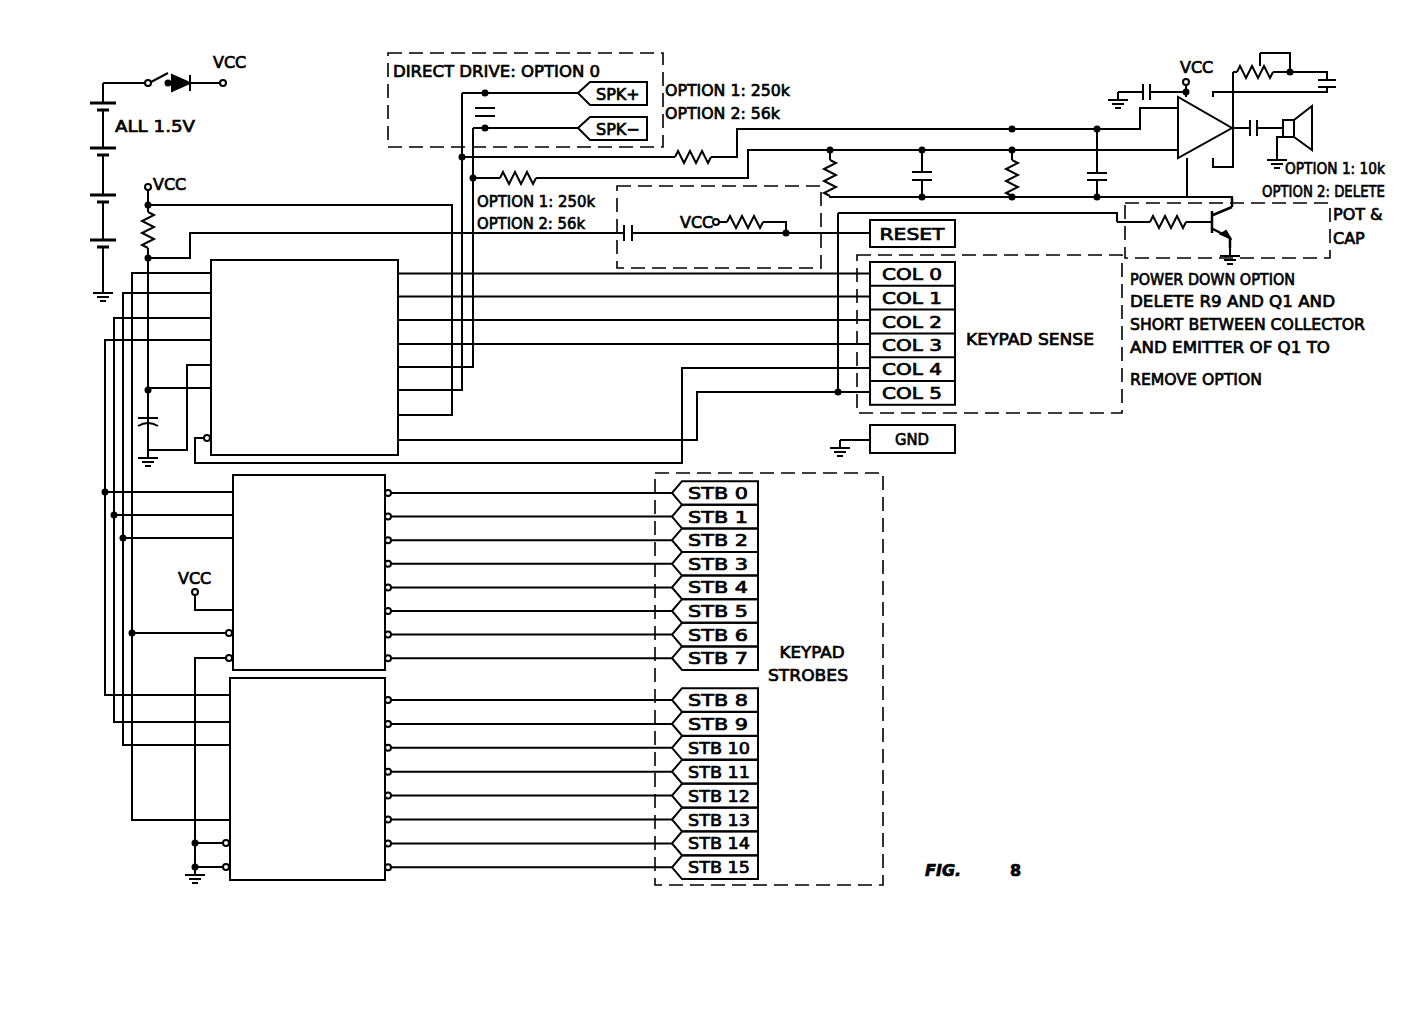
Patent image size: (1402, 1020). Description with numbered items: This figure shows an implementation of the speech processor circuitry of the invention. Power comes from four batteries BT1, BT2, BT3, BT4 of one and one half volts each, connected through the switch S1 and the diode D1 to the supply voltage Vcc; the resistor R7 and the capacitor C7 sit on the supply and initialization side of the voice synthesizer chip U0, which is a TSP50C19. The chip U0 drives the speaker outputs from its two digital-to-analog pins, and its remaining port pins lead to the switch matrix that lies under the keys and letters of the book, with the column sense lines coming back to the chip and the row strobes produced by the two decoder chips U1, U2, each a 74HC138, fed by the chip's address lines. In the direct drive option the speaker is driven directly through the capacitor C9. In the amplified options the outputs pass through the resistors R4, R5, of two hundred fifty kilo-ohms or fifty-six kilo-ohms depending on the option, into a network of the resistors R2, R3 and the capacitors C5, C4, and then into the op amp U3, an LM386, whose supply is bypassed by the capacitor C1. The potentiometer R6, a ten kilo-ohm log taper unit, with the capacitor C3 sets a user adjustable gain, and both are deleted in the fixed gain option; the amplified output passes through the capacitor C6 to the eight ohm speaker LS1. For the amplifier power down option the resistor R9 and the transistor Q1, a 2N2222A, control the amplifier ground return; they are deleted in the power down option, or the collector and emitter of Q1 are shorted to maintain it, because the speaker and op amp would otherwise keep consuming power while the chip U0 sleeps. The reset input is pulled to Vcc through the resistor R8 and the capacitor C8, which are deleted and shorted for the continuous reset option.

The battery BT1 is at (119, 243).
The battery BT2 is at (114, 202).
The battery BT3 is at (119, 151).
The battery BT4 is at (119, 106).
The switch S1 is at (135, 69).
The diode D1 is at (195, 81).
The resistor R7 is at (165, 231).
The capacitor C7 is at (163, 411).
The voice synthesizer chip U0 is at (310, 355).
The capacitor C9 is at (512, 113).
The resistor R4 is at (530, 171).
The resistor R5 is at (693, 147).
The capacitor C8 is at (640, 235).
The resistor R8 is at (761, 212).
The resistor R2 is at (850, 176).
The capacitor C5 is at (950, 176).
The resistor R3 is at (1032, 176).
The capacitor C4 is at (1125, 176).
The capacitor C1 is at (1145, 80).
The op amp U3 is at (1204, 129).
The potentiometer R6 is at (1258, 65).
The capacitor C3 is at (1347, 87).
The capacitor C6 is at (1261, 141).
The speaker LS1 is at (1313, 128).
The transistor Q1 is at (1260, 224).
The resistor R9 is at (1176, 234).
The decoder chip U1 is at (318, 572).
The decoder chip U2 is at (317, 778).